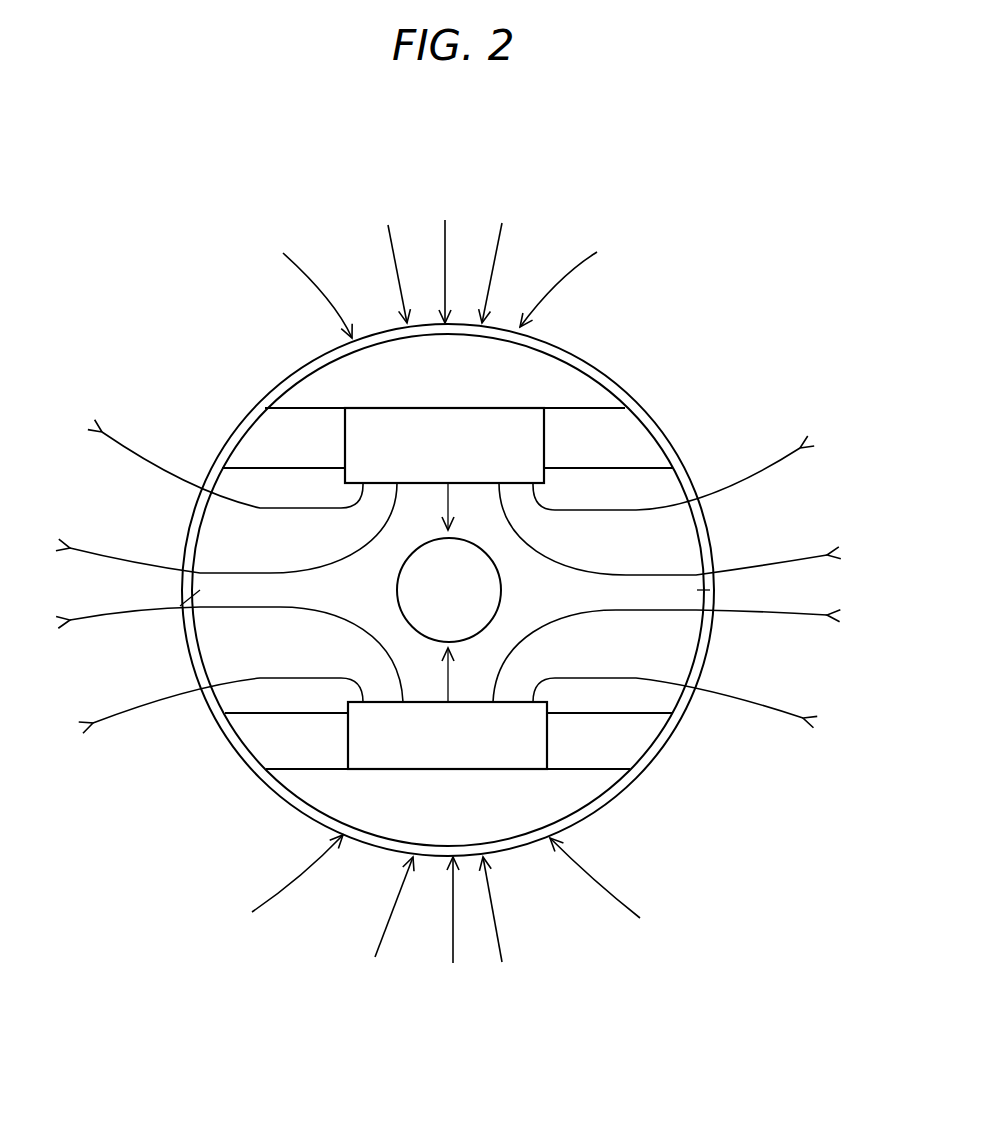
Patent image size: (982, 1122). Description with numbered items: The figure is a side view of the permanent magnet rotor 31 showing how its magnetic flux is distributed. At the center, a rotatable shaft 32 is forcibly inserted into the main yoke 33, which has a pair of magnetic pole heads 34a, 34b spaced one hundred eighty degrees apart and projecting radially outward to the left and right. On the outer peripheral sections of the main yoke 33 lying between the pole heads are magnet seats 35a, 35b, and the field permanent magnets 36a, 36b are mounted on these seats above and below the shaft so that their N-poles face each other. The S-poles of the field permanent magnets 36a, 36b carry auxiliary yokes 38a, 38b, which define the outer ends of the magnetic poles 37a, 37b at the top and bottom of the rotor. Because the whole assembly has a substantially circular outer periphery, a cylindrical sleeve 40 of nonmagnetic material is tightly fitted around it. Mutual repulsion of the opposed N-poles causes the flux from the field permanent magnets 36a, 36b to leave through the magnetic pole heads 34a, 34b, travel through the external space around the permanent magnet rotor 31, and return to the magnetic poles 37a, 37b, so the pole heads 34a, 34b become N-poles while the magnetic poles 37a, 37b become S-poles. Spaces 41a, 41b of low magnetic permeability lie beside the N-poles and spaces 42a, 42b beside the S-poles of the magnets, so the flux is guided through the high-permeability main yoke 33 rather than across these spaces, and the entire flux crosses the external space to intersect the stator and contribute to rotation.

The permanent magnet rotor 31 is at (745, 240).
The rotatable shaft 32 is at (475, 605).
The main yoke 33 is at (505, 555).
The magnetic pole head 34a is at (180, 613).
The magnetic pole head 34b is at (720, 590).
The magnet seat 35a is at (507, 482).
The magnet seat 35b is at (507, 703).
The field permanent magnet 36a is at (485, 440).
The field permanent magnet 36b is at (505, 755).
The magnetic pole 37a is at (458, 345).
The magnetic pole 37b is at (460, 845).
The auxiliary yoke 38a is at (535, 373).
The auxiliary yoke 38b is at (315, 792).
The cylindrical sleeve 40 is at (673, 728).
The space of low magnetic permeability 41a is at (270, 433).
The space of low magnetic permeability 41b is at (630, 433).
The space of low magnetic permeability 42a is at (260, 733).
The space of low magnetic permeability 42b is at (637, 748).